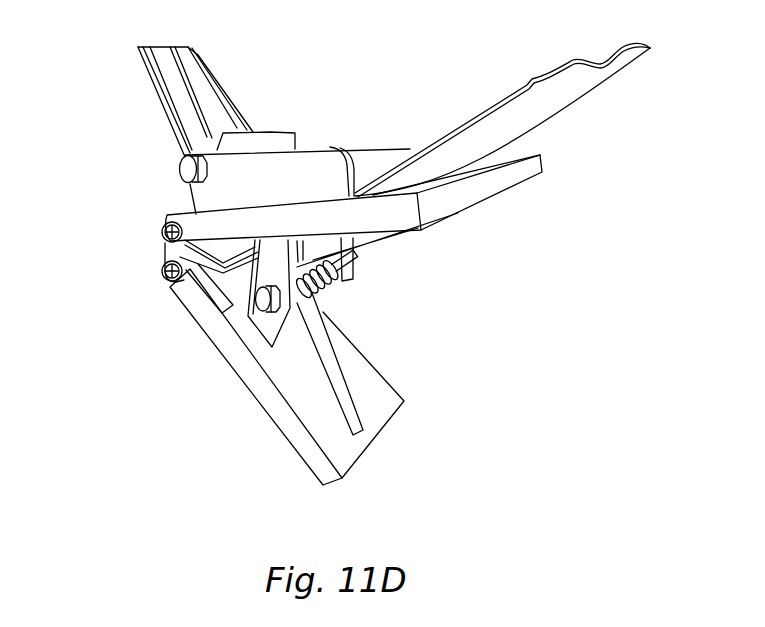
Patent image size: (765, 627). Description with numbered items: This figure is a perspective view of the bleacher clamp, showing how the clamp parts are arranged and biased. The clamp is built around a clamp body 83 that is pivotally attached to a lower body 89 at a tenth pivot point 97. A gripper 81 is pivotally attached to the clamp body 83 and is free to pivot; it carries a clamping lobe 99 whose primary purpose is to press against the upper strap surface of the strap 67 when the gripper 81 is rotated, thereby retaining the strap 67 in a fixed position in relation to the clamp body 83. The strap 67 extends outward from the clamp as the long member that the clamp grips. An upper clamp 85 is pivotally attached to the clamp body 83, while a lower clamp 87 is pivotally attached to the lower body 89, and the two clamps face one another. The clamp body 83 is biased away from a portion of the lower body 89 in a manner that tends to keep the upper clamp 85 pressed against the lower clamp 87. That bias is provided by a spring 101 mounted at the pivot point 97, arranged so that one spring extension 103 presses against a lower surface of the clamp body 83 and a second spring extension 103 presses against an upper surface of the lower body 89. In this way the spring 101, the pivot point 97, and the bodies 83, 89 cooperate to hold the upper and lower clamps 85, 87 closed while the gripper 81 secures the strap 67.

The strap 67 is at (579, 97).
The gripper 81 is at (148, 76).
The clamp body 83 is at (405, 210).
The upper clamp 85 is at (163, 246).
The lower clamp 87 is at (163, 256).
The lower body 89 is at (376, 415).
The tenth pivot point 97 is at (256, 297).
The clamping lobe 99 is at (220, 150).
The spring 101 is at (318, 338).
The spring extension 103 is at (378, 247).